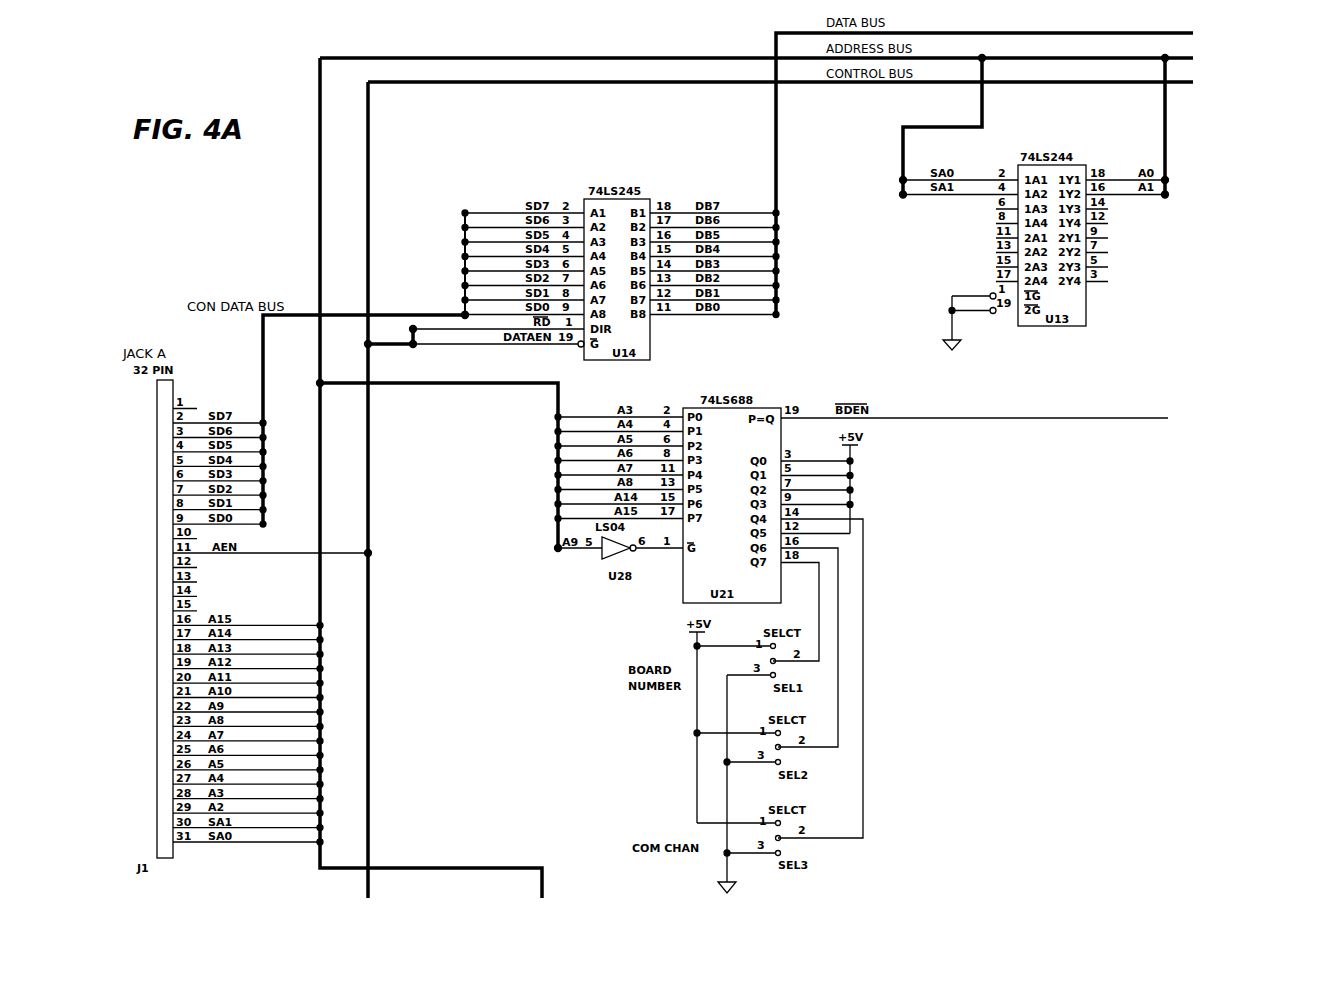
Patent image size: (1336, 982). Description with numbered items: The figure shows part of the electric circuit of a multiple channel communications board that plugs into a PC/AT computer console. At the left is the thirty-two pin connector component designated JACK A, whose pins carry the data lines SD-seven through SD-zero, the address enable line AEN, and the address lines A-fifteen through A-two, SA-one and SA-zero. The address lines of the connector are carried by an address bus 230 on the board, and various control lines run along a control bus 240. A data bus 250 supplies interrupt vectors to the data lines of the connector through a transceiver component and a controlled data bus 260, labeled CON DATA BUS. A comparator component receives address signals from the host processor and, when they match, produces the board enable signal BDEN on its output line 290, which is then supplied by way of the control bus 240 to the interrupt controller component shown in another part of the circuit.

The data bus 250 is at (1193, 33).
The address bus 230 is at (1193, 58).
The control bus 240 is at (1193, 82).
The controlled data bus 260 is at (394, 317).
The output line 290 is at (1062, 419).